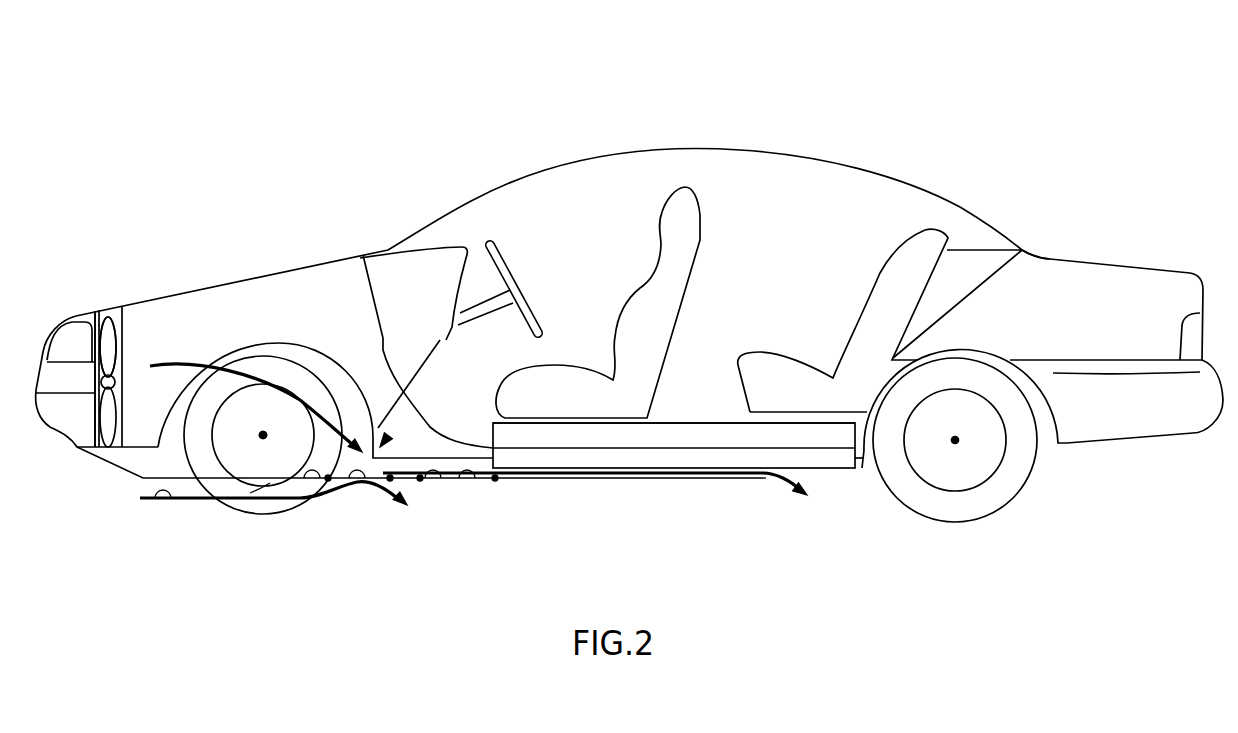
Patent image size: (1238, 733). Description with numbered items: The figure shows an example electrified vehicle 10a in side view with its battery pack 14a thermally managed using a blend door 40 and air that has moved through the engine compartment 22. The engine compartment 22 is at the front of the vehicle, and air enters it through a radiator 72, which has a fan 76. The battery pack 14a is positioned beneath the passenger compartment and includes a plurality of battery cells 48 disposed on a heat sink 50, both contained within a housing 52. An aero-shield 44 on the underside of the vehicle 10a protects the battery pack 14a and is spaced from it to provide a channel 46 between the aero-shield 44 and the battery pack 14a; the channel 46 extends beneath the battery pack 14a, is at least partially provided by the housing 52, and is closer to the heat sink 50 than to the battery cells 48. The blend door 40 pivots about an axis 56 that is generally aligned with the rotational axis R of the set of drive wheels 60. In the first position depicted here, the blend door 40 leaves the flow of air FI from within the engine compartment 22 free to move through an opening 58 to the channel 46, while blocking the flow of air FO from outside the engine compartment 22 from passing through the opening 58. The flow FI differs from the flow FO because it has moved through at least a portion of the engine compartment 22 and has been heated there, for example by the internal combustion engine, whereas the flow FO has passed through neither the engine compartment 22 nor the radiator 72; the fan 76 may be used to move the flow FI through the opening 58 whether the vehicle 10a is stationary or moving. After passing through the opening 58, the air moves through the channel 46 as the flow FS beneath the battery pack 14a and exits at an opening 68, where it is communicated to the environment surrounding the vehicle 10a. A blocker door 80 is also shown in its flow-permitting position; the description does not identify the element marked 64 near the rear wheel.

The electrified vehicle 10a is at (1062, 112).
The battery pack 14a is at (493, 447).
The engine compartment 22 is at (227, 300).
The blend door 40 is at (358, 486).
The aero-shield 44 is at (233, 508).
The channel 46 is at (580, 492).
The battery cells 48 is at (705, 445).
The heat sink 50 is at (663, 460).
The housing 52 is at (720, 425).
The axis 56 is at (303, 486).
The opening 58 is at (386, 440).
The drive wheels 60 is at (257, 490).
The rear wheel 64 is at (864, 468).
The opening 68 is at (780, 498).
The radiator 72 is at (118, 308).
The fan 76 is at (116, 340).
The blocker door 80 is at (434, 486).
The flow of air FI is at (176, 358).
The flow of air FO is at (157, 500).
The flow FS is at (470, 486).
The rotational axis R is at (262, 430).